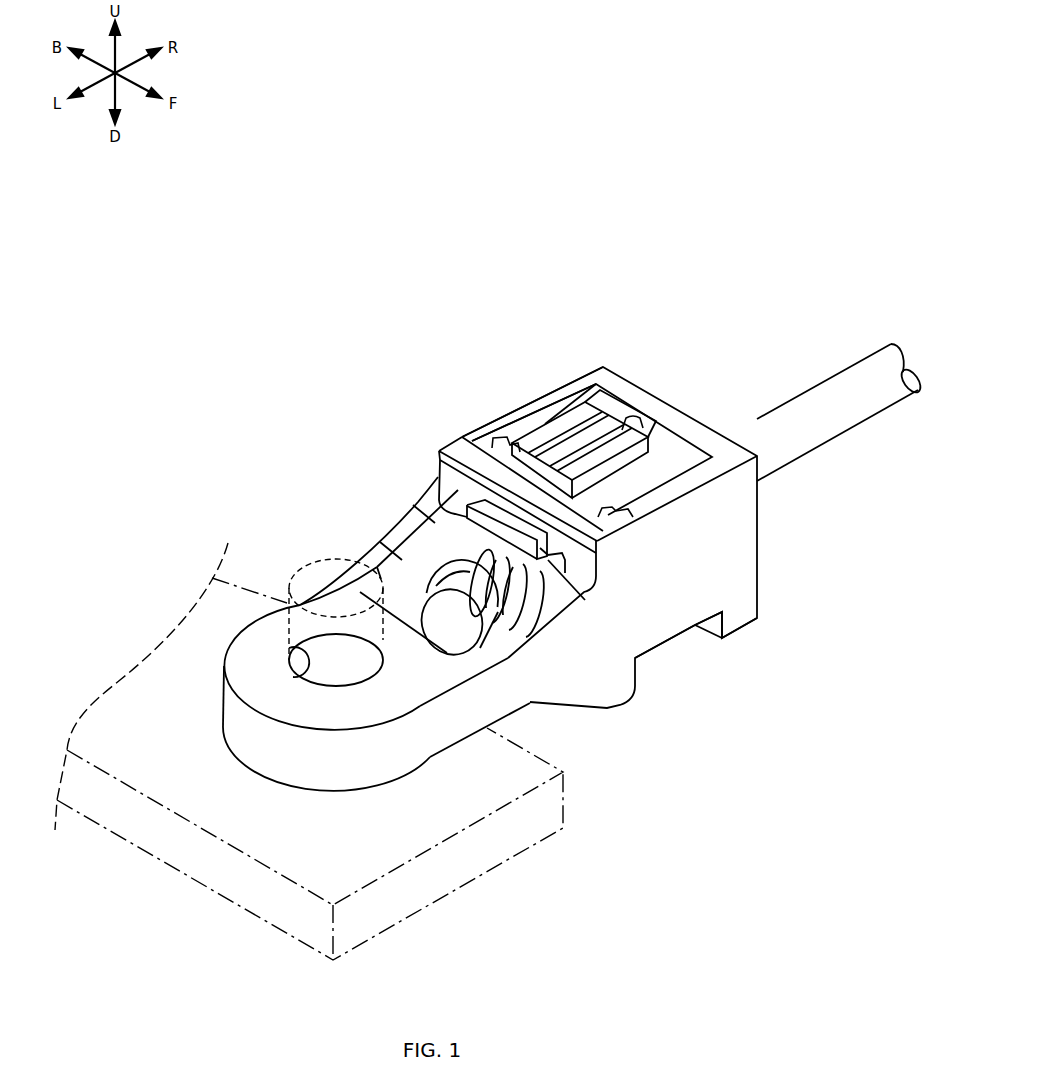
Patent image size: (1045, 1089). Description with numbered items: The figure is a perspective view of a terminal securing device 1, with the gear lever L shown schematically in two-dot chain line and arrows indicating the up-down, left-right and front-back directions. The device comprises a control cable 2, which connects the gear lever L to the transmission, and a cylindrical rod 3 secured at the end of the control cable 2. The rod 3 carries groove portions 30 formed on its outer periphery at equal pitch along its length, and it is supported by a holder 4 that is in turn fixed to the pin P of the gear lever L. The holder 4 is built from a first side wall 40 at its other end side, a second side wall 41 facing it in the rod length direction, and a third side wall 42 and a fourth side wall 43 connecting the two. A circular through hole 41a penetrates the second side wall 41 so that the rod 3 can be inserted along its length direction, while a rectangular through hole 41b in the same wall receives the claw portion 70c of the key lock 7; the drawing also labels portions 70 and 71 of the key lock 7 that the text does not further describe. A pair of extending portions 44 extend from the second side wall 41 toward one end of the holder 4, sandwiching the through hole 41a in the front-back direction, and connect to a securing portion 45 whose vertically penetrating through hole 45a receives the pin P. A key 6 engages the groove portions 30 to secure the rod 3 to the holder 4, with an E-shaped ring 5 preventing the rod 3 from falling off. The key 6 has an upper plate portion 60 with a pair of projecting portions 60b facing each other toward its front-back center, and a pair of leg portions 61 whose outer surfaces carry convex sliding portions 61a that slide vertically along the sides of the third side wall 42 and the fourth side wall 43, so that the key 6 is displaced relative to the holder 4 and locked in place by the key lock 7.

The terminal securing device 1 is at (805, 108).
The control cable 2 is at (823, 422).
The rod 3 is at (434, 657).
The holder 4 is at (366, 445).
The E-shaped ring 5 is at (378, 508).
The key 6 is at (700, 429).
The key lock 7 is at (490, 350).
The groove portions 30 is at (522, 620).
The first side wall 40 is at (677, 413).
The second side wall 41 is at (600, 553).
The through hole 41a is at (427, 488).
The through hole 41b is at (560, 566).
The third side wall 42 is at (673, 615).
The fourth side wall 43 is at (565, 400).
The extending portions 44 is at (378, 542).
The securing portion 45 is at (321, 716).
The through hole 45a is at (292, 648).
The upper plate portion 60 is at (590, 402).
The projecting portions 60b is at (670, 428).
The leg portions 61 is at (601, 470).
The sliding portions 61a is at (498, 433).
The contact plate 70 is at (498, 370).
The claw portion 70c is at (440, 448).
The pressing portion 71 is at (546, 358).
The pin P is at (323, 563).
The gear lever L is at (416, 888).